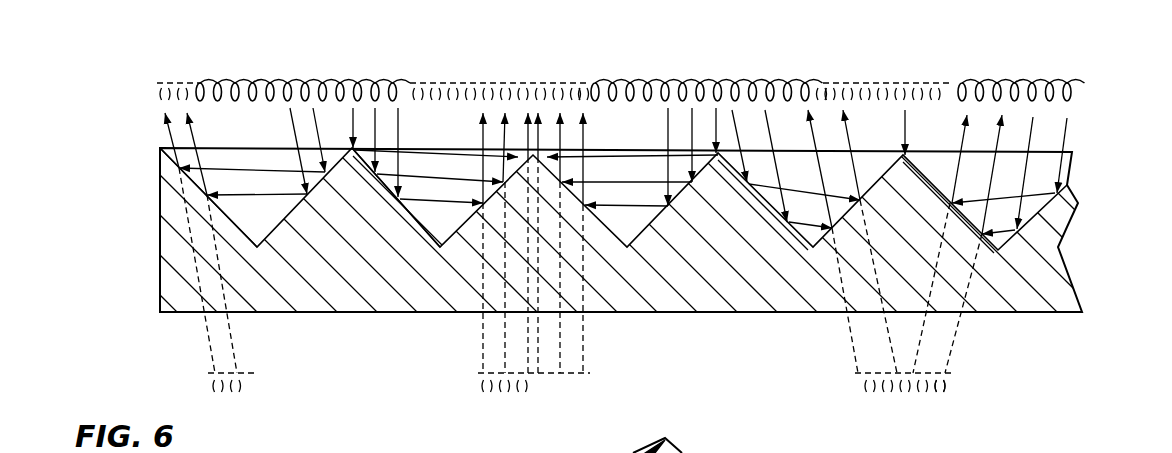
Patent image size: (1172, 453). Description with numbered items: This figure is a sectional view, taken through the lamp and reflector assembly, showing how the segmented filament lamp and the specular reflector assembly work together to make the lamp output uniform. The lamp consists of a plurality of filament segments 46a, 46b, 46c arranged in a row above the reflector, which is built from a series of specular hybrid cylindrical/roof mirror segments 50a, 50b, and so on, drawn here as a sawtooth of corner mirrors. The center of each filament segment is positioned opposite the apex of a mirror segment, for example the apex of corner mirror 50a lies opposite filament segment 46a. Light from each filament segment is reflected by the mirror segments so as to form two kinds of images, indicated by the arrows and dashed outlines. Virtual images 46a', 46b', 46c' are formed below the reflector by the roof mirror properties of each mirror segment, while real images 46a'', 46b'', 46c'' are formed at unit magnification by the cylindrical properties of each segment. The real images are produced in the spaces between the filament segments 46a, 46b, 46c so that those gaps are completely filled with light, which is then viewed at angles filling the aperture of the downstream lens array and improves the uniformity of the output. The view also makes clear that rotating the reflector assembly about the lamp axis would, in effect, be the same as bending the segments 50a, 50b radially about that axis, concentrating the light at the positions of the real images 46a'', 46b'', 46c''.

The filament segment 46a is at (303, 107).
The filament segment 46b is at (707, 80).
The filament segment 46c is at (1048, 126).
The virtual image 46a' is at (263, 393).
The virtual image 46b' is at (756, 398).
The virtual image 46c' is at (973, 399).
The real image 46a'' is at (341, 245).
The real image 46b'' is at (740, 95).
The real image 46c'' is at (887, 112).
The corner mirror segment 50a is at (288, 218).
The mirror segment 50b is at (403, 200).